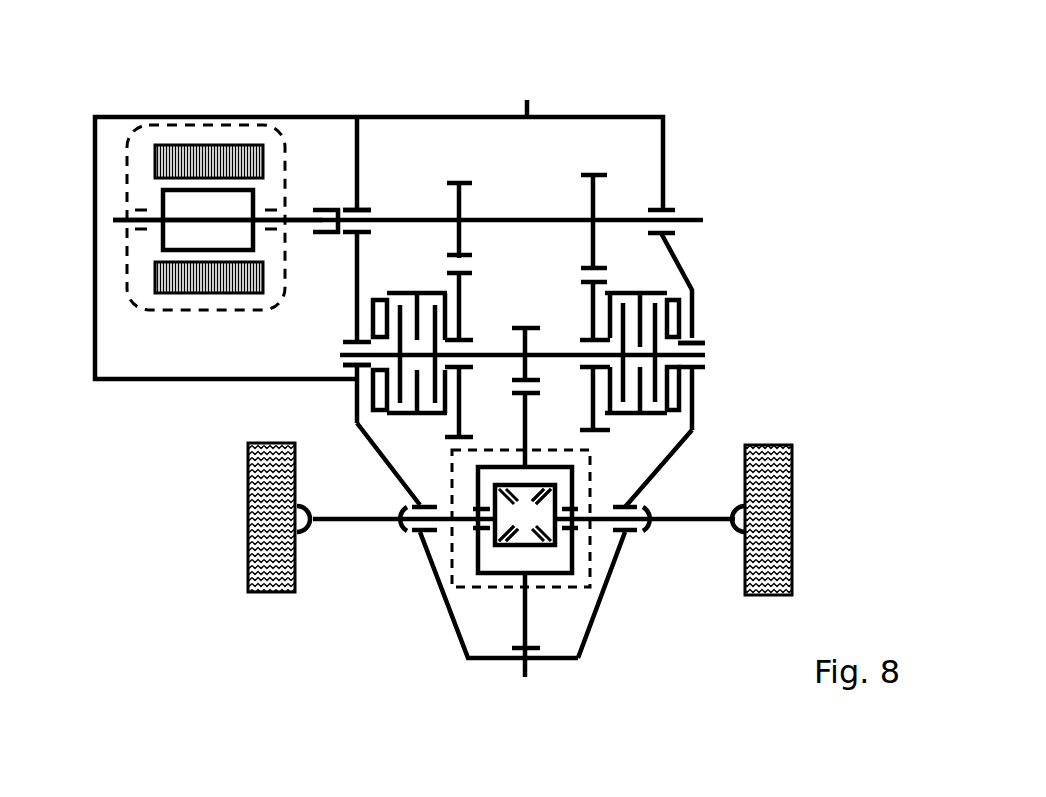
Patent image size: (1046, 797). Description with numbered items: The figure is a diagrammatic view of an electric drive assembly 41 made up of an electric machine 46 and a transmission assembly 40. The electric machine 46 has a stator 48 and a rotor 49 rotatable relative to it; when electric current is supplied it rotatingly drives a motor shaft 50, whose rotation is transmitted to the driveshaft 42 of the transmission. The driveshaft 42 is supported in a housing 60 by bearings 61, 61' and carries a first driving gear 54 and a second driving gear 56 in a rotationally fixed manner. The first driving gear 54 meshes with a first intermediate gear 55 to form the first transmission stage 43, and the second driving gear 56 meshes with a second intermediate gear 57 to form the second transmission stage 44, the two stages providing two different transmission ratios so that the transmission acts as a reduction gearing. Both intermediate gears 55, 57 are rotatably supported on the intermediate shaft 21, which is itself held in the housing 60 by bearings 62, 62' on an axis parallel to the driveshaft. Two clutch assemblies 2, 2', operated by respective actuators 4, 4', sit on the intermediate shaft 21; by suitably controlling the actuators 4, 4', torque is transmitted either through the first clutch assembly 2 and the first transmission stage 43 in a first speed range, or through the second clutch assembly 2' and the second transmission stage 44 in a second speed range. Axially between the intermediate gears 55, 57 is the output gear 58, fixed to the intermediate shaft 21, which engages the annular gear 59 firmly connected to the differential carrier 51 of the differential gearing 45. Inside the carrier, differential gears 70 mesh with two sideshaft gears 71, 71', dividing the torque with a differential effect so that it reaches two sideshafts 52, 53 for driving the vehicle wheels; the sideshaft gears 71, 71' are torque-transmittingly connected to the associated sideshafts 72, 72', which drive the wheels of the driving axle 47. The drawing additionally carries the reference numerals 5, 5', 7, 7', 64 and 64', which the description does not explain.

The first clutch assembly 2 is at (369, 221).
The second clutch assembly 2' is at (720, 305).
The actuator 4 is at (347, 397).
The actuator 4' is at (706, 312).
The clutch plate 5 is at (364, 320).
The clutch plate 5' is at (697, 386).
The clutch 7 is at (405, 329).
The second clutch 7' is at (684, 330).
The intermediate shaft 21 is at (555, 350).
The transmission assembly 40 is at (562, 82).
The electric drive assembly 41 is at (345, 66).
The driveshaft 42 is at (517, 217).
The first transmission stage 43 is at (442, 236).
The second transmission stage 44 is at (605, 243).
The differential gearing 45 is at (585, 580).
The electric machine 46 is at (205, 110).
The driving axle 47 is at (186, 515).
The stator 48 is at (250, 145).
The rotor 49 is at (172, 145).
The motor shaft 50 is at (318, 208).
The differential carrier 51 is at (502, 575).
The sideshaft 52 is at (690, 527).
The sideshaft 53 is at (348, 523).
The first driving gear 54 is at (470, 180).
The first intermediate gear 55 is at (446, 272).
The second driving gear 56 is at (593, 173).
The second intermediate gear 57 is at (600, 298).
The output gear 58 is at (518, 327).
The annular gear 59 is at (537, 667).
The housing 60 is at (665, 147).
The bearing 61 is at (372, 175).
The bearing 61' is at (697, 199).
The bearing 62 is at (314, 393).
The bearing 62' is at (735, 327).
The housing wall 64 is at (445, 540).
The housing wall 64' is at (651, 544).
The differential gears 70 is at (533, 547).
The sideshaft gear 71 is at (458, 566).
The sideshaft gear 71' is at (586, 482).
The sideshaft 72 is at (270, 550).
The sideshaft 72' is at (801, 520).